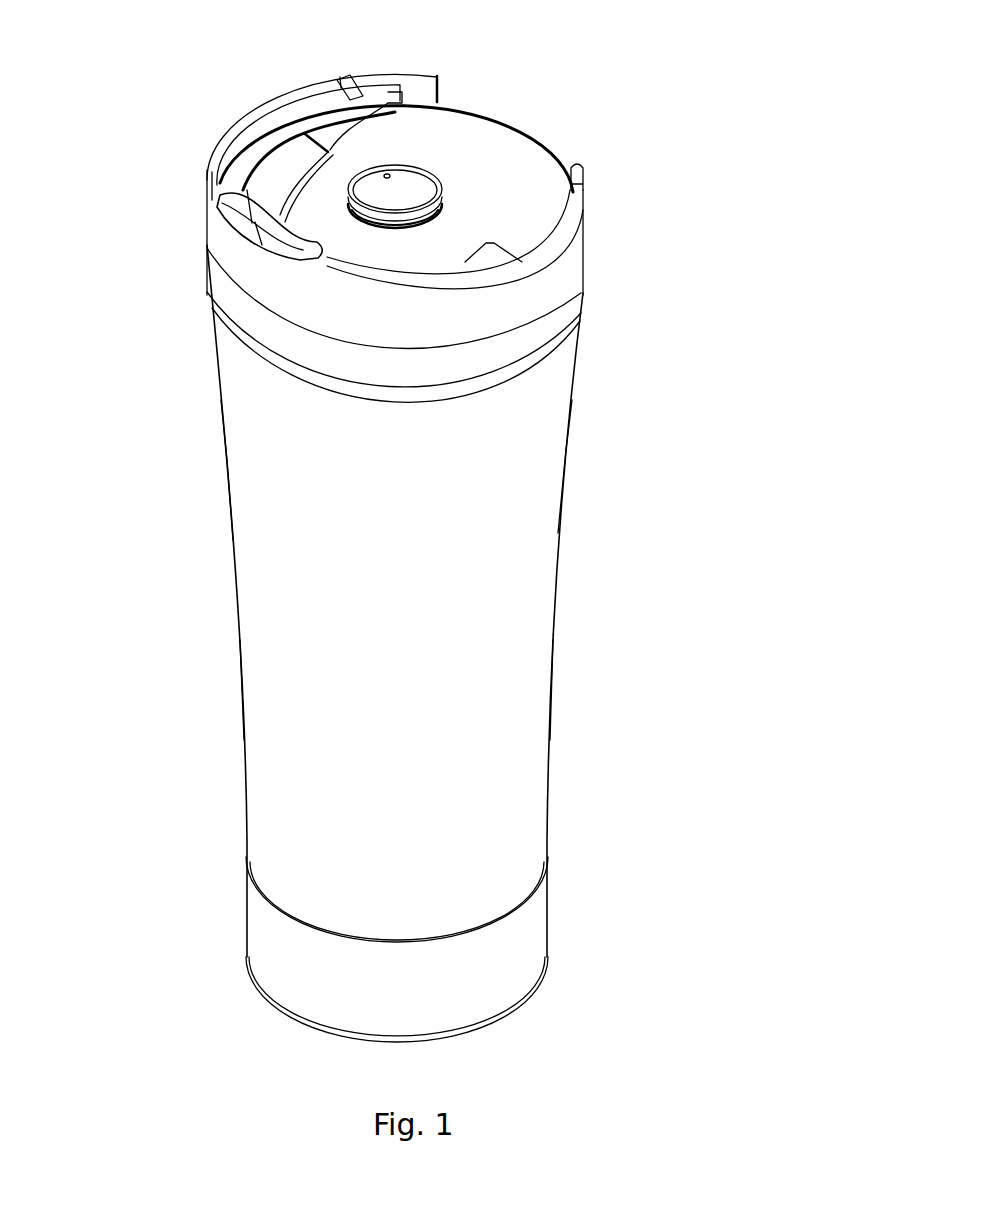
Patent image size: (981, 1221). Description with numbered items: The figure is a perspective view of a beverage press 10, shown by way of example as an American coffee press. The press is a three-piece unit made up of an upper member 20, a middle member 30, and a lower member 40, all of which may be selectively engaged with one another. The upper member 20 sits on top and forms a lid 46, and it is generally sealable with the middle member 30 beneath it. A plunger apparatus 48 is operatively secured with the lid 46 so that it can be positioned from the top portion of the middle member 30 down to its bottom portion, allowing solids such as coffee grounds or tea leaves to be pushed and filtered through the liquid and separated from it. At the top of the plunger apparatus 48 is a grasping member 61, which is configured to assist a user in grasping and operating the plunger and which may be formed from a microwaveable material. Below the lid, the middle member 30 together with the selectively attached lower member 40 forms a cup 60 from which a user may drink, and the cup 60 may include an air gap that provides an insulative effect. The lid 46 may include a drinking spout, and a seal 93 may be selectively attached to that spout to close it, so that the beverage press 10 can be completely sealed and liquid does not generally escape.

The beverage press 10 is at (668, 300).
The upper member 20 is at (585, 224).
The middle member 30 is at (559, 533).
The lower member 40 is at (547, 923).
The lid 46 is at (474, 112).
The plunger apparatus 48 is at (426, 177).
The cup 60 is at (527, 760).
The grasping member 61 is at (387, 175).
The seal 93 is at (228, 221).